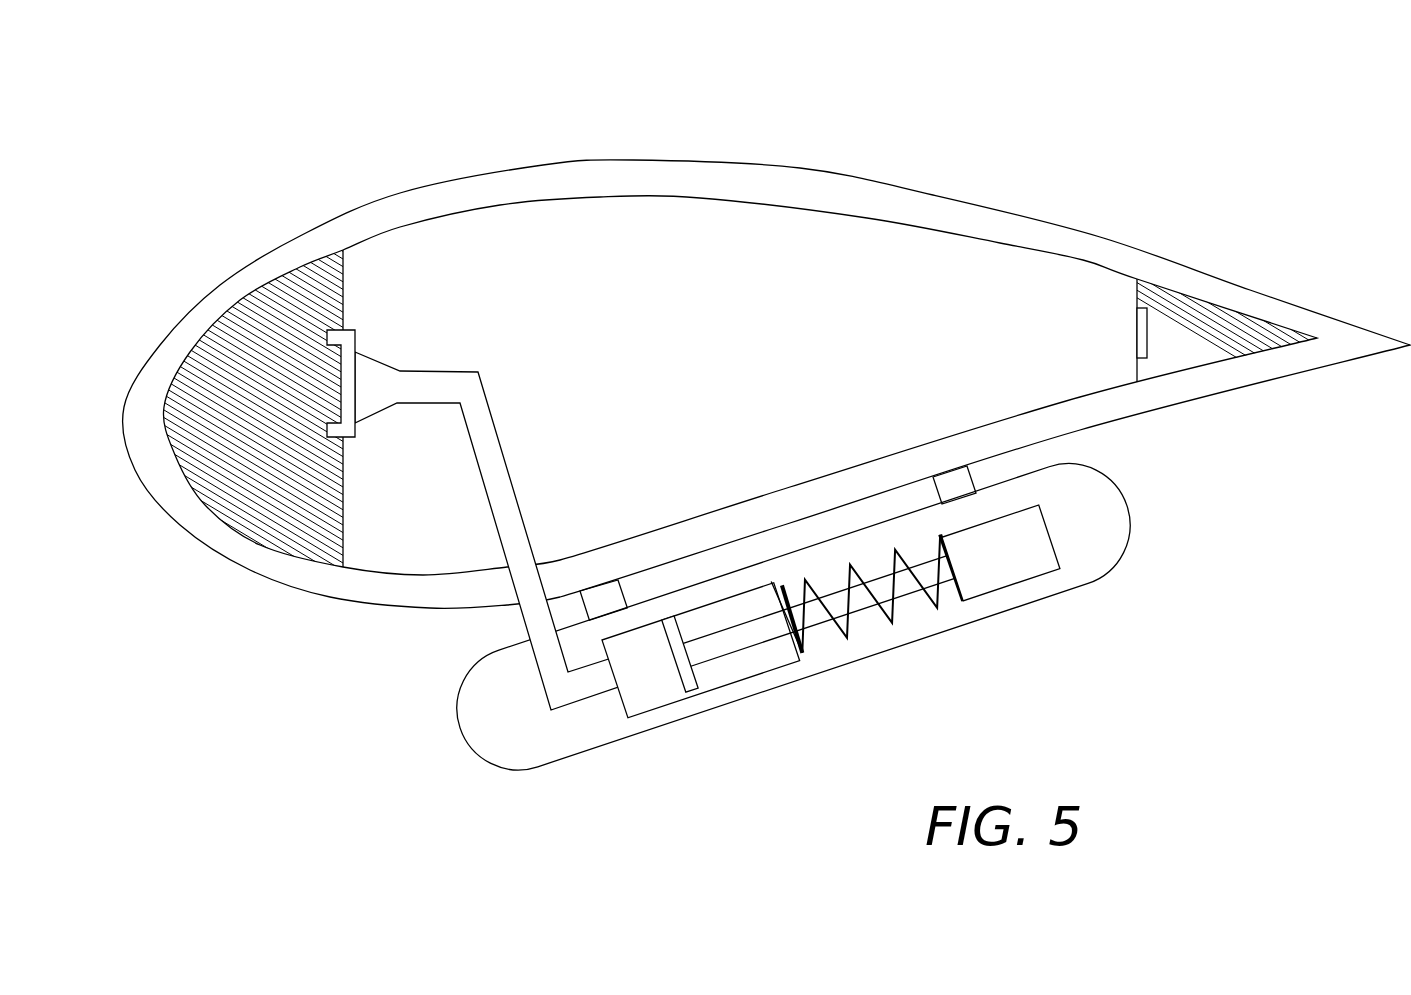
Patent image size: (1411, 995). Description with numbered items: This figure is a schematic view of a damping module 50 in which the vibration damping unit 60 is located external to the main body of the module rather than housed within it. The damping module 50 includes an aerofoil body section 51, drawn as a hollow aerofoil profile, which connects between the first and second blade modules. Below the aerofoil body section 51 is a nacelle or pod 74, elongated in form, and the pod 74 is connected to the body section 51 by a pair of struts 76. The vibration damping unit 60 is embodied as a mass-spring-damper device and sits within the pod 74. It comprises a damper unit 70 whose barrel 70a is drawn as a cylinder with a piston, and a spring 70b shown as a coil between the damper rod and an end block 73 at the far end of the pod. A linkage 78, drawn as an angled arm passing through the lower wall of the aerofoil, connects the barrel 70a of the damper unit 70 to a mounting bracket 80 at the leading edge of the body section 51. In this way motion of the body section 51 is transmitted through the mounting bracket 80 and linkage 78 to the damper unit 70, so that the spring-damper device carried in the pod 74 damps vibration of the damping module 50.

The damping module 50 is at (766, 449).
The aerofoil body section 51 is at (543, 165).
The vibration damping unit 60 is at (752, 688).
The damper unit 70 is at (872, 656).
The barrel 70a is at (783, 623).
The spring 70b is at (867, 591).
The end block 73 is at (1038, 548).
The pod 74 is at (438, 798).
The struts 76 is at (617, 600).
The linkage 78 is at (515, 557).
The mounting bracket 80 is at (386, 367).